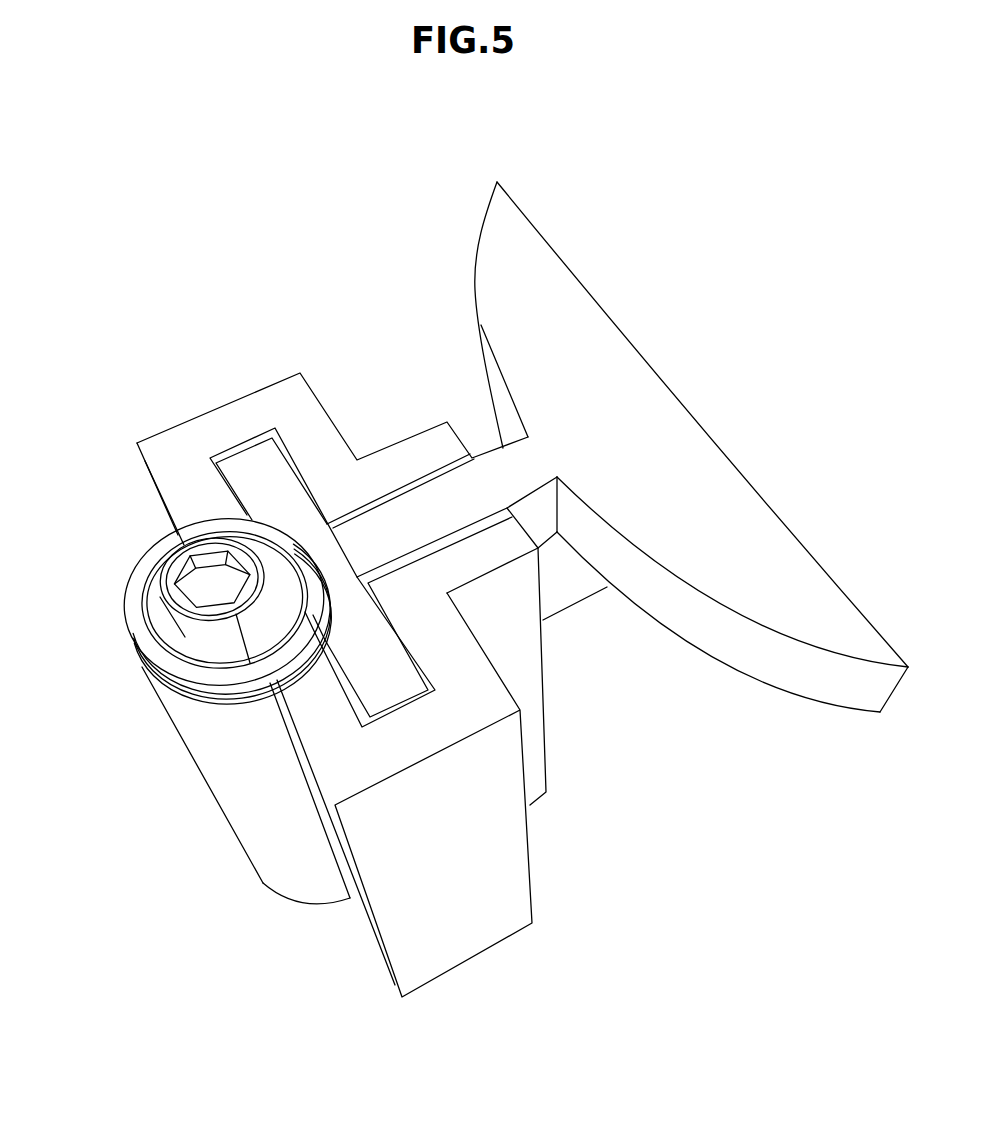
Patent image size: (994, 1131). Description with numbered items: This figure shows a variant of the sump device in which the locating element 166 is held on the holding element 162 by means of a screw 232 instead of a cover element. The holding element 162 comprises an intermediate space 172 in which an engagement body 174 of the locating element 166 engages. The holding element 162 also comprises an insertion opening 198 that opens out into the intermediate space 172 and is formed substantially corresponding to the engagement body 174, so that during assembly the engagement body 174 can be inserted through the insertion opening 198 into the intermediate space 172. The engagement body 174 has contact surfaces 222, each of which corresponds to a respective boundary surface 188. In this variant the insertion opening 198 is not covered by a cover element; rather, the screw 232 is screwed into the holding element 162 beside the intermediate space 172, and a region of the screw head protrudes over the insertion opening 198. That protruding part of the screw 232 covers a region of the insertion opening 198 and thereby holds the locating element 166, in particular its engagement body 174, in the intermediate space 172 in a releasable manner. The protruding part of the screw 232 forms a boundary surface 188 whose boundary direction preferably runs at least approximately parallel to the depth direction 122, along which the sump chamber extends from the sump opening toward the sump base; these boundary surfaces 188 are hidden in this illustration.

The depth direction 122 is at (134, 765).
The holding element 162 is at (494, 752).
The locating element 166 is at (465, 331).
The intermediate space 172 is at (323, 461).
The engagement body 174 is at (400, 449).
The boundary surface 188 is at (671, 447).
The insertion opening 198 is at (347, 703).
The contact surface 222 is at (473, 633).
The screw 232 is at (194, 611).